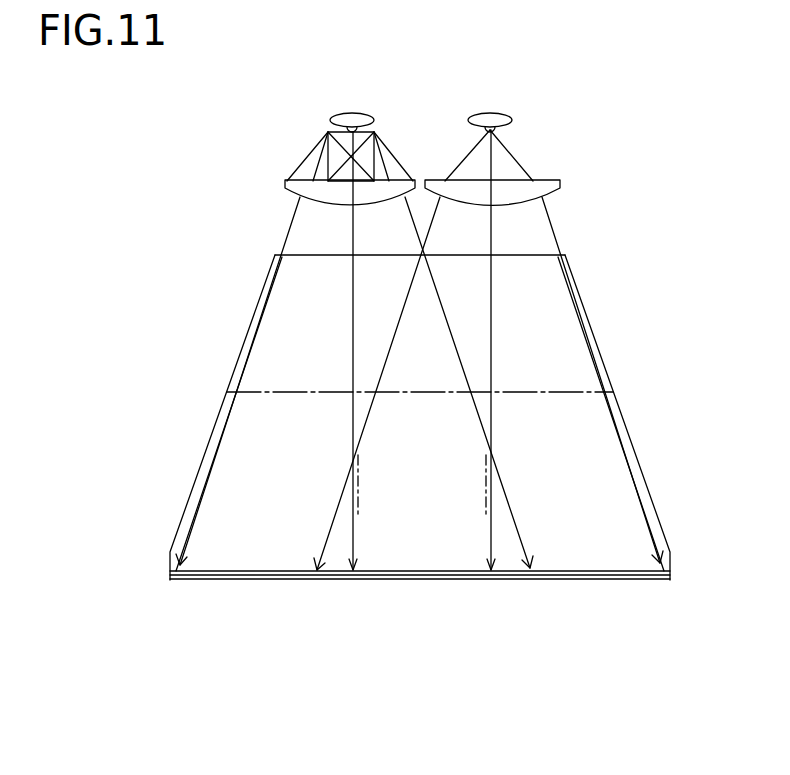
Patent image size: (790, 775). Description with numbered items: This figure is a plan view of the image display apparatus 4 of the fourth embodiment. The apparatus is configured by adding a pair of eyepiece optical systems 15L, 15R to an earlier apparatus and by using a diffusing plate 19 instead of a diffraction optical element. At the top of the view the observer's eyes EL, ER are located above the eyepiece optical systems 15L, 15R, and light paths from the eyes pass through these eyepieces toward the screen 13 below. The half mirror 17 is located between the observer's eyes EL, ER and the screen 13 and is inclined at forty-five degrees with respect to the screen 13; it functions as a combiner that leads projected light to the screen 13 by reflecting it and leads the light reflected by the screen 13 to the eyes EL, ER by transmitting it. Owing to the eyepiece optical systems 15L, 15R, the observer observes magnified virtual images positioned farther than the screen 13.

The image display apparatus 4 is at (459, 637).
The screen 13 is at (258, 580).
The eyepiece optical system 15R is at (285, 184).
The eyepiece optical system 15L is at (560, 181).
The half mirror 17 is at (577, 356).
The diffusing plate 19 is at (212, 571).
The observer's eye ER is at (340, 114).
The observer's eye EL is at (500, 114).